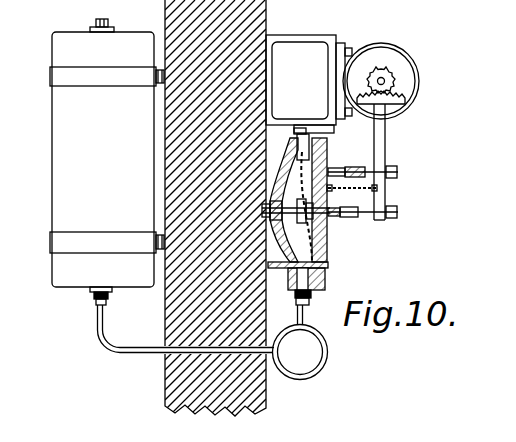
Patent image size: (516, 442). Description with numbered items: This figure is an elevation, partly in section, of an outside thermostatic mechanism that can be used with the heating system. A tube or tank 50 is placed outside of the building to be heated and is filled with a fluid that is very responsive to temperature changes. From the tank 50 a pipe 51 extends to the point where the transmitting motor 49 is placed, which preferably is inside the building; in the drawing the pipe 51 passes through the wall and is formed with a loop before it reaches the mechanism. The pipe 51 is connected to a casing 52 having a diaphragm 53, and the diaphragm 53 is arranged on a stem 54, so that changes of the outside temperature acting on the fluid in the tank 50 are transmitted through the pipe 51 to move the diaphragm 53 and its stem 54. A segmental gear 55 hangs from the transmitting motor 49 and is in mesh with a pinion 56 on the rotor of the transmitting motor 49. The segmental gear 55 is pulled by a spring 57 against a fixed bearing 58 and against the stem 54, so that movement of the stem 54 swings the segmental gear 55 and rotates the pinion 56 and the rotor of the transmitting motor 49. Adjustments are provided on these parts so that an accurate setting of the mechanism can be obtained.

The transmitting motor 49 is at (413, 51).
The tank 50 is at (72, 174).
The pipe 51 is at (146, 355).
The casing 52 is at (326, 272).
The diaphragm 53 is at (320, 248).
The stem 54 is at (330, 228).
The segmental gear 55 is at (400, 104).
The pinion 56 is at (392, 80).
The spring 57 is at (363, 204).
The fixed bearing 58 is at (353, 165).